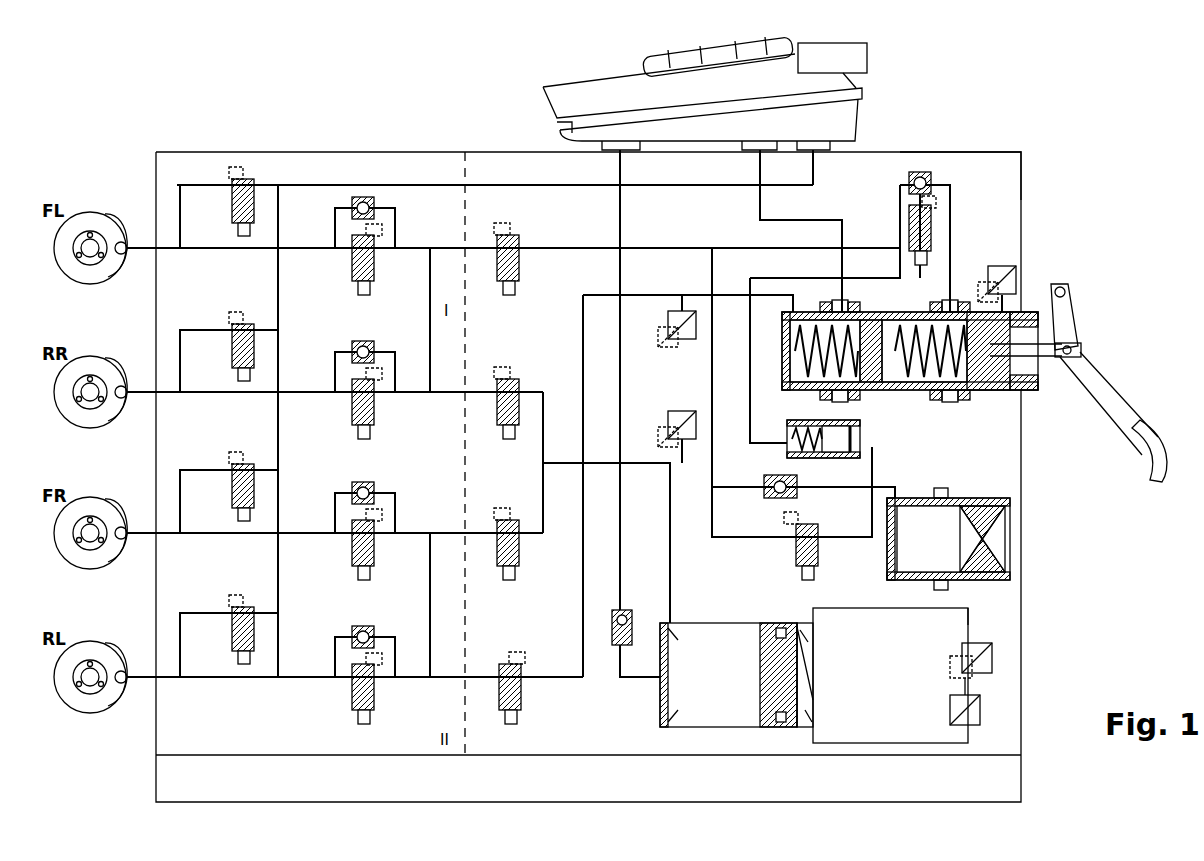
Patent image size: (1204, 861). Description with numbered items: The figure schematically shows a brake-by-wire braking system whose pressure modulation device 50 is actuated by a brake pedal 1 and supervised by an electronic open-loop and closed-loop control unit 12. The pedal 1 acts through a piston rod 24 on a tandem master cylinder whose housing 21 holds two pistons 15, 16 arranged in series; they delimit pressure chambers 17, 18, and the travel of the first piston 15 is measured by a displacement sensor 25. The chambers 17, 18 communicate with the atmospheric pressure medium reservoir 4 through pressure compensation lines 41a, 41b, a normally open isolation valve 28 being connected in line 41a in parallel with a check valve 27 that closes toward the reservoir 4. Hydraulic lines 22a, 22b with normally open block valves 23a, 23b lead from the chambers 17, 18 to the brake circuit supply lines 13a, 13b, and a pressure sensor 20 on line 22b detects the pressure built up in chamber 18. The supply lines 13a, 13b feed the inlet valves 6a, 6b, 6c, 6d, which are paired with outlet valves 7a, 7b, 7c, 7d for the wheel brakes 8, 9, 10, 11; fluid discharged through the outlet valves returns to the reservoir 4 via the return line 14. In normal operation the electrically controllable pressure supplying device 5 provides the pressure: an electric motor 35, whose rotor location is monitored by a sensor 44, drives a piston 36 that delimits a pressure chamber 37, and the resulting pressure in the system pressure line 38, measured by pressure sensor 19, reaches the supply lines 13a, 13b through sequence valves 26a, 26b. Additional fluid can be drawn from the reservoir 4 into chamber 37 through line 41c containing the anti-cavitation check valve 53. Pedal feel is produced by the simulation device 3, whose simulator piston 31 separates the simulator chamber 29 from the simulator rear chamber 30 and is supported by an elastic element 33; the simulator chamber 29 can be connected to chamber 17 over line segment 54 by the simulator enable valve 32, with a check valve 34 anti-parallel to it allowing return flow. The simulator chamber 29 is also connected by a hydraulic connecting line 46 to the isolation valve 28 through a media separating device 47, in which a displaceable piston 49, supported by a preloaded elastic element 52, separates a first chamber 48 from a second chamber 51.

The brake pedal 1 is at (1105, 400).
The simulation device 3 is at (1012, 490).
The pressure medium reservoir 4 is at (583, 90).
The pressure supplying device 5 is at (972, 625).
The inlet valve 6a is at (351, 262).
The inlet valve 6b is at (351, 406).
The inlet valve 6c is at (351, 547).
The inlet valve 6d is at (351, 690).
The outlet valve 7a is at (231, 205).
The outlet valve 7b is at (231, 350).
The outlet valve 7c is at (231, 490).
The outlet valve 7d is at (231, 633).
The wheel brake 8 is at (118, 278).
The wheel brake 9 is at (118, 422).
The wheel brake 10 is at (118, 563).
The wheel brake 11 is at (118, 707).
The electronic open-loop and closed-loop control unit 12 is at (1021, 778).
The brake circuit supply line 13a is at (430, 315).
The brake circuit supply line 13b is at (430, 600).
The return line 14 is at (330, 185).
The piston 15 is at (990, 386).
The piston 16 is at (870, 392).
The pressure chamber 17 is at (925, 386).
The pressure chamber 18 is at (800, 332).
The pressure sensor 19 is at (682, 411).
The pressure sensor 20 is at (680, 311).
The housing 21 is at (986, 152).
The hydraulic line 22a is at (610, 248).
The hydraulic line 22b is at (583, 300).
The block valve 23a is at (515, 296).
The block valve 23b is at (522, 690).
The piston rod 24 is at (1046, 358).
The displacement sensor 25 is at (1018, 272).
The sequence valve 26a is at (510, 432).
The sequence valve 26b is at (510, 574).
The check valve 27 is at (918, 172).
The isolation valve 28 is at (908, 228).
The simulator chamber 29 is at (887, 565).
The simulator rear chamber 30 is at (1010, 520).
The simulator piston 31 is at (955, 510).
The simulator enable valve 32 is at (820, 540).
The elastic element 33 is at (1010, 550).
The check valve 34 is at (765, 495).
The electric motor 35 is at (862, 715).
The piston 36 is at (778, 727).
The pressure chamber 37 is at (718, 710).
The system pressure line 38 is at (672, 556).
The pressure compensation line 41a is at (952, 250).
The pressure compensation line 41b is at (790, 215).
The line 41c is at (622, 215).
The rotor location sensor 44 is at (992, 660).
The hydraulic connecting line 46 is at (748, 380).
The media separating device 47 is at (868, 440).
The first chamber 48 is at (856, 458).
The displaceable piston 49 is at (840, 452).
The pressure modulation device 50 is at (178, 152).
The second chamber 51 is at (800, 420).
The elastic element 52 is at (792, 445).
The anti-cavitation valve 53 is at (624, 610).
The line segment 54 is at (710, 470).